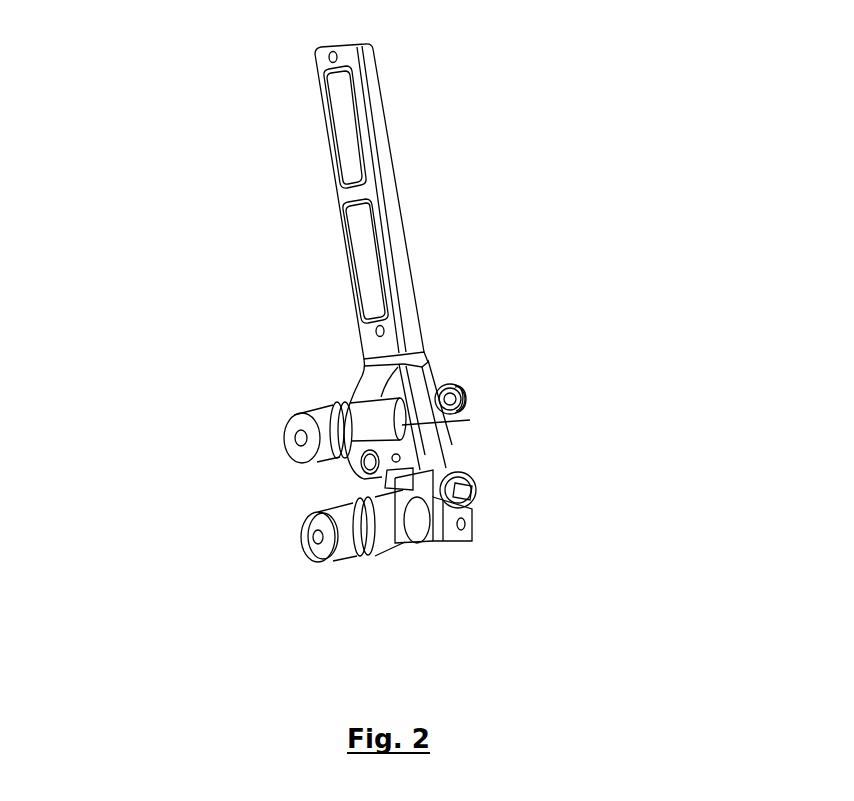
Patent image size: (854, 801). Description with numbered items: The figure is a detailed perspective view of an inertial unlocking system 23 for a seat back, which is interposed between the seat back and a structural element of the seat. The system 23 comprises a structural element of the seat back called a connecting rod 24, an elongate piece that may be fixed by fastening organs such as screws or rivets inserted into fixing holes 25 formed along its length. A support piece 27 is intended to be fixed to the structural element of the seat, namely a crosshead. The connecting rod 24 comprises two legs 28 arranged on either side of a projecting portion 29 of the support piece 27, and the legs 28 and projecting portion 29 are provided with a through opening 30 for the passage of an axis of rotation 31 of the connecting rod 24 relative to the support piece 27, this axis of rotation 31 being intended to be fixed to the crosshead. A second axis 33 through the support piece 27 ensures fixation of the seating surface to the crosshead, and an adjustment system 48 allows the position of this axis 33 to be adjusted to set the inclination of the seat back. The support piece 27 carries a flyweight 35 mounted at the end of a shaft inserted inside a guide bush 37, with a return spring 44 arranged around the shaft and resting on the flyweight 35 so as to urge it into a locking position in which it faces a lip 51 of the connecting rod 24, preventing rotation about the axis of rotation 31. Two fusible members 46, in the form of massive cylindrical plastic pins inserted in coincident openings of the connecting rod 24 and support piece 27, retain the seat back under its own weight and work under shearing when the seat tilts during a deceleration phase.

The inertial unlocking system 23 is at (181, 135).
The connecting rod 24 is at (387, 182).
The fixing holes 25 is at (360, 187).
The support piece 27 is at (440, 448).
The legs 28 is at (410, 402).
The projecting portion 29 is at (443, 390).
The through opening 30 is at (418, 425).
The axis of rotation 31 is at (324, 415).
The second axis 33 is at (343, 533).
The flyweight 35 is at (390, 546).
The guide bush 37 is at (472, 498).
The return spring 44 is at (400, 490).
The fusible members 46 is at (362, 465).
The adjustment system 48 is at (478, 538).
The lip 51 is at (367, 448).